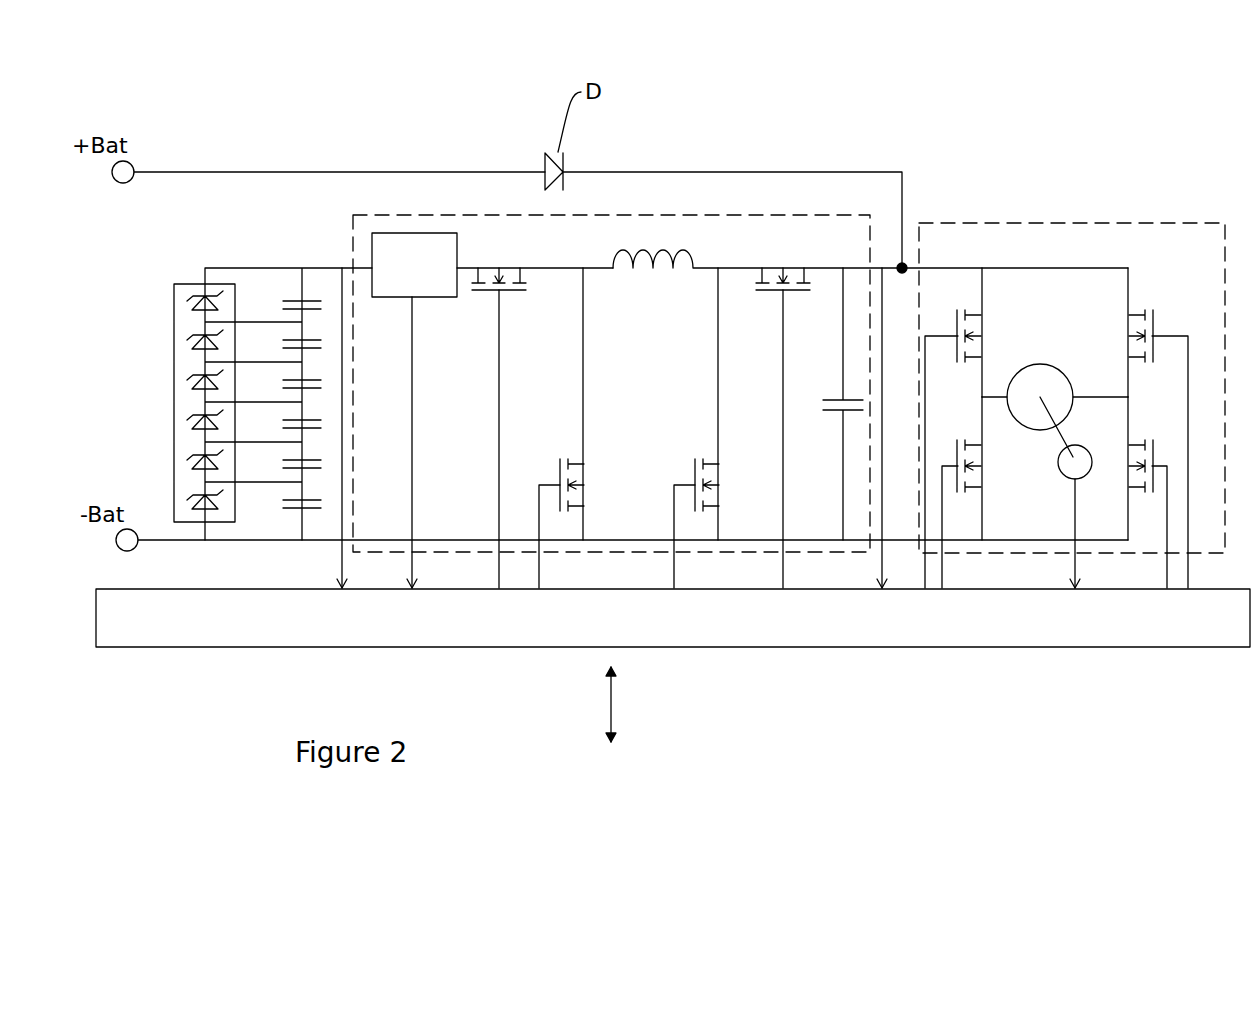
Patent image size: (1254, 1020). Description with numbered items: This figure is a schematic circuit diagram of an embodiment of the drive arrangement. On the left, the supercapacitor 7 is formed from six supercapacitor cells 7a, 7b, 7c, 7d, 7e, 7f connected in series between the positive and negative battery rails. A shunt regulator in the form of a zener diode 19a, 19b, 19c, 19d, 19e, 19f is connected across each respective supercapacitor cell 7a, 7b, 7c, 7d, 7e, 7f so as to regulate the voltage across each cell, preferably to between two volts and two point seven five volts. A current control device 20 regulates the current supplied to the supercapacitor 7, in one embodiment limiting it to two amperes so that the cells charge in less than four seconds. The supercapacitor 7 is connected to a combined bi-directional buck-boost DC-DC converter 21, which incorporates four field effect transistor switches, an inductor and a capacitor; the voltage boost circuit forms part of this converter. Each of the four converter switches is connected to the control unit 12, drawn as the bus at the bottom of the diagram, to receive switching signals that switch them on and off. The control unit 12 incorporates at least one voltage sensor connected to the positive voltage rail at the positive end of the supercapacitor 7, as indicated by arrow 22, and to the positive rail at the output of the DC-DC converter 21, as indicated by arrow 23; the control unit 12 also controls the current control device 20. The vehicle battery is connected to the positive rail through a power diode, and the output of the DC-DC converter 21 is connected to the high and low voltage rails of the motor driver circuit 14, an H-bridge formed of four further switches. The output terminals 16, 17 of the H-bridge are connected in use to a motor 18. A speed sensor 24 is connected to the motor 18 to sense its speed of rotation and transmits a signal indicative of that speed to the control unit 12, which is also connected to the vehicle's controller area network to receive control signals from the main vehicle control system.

The supercapacitor 7 is at (250, 370).
The supercapacitor cell 7a is at (283, 300).
The supercapacitor cell 7b is at (283, 339).
The supercapacitor cell 7c is at (283, 379).
The supercapacitor cell 7d is at (283, 419).
The supercapacitor cell 7e is at (283, 459).
The supercapacitor cell 7f is at (283, 499).
The zener diode 19a is at (192, 298).
The zener diode 19b is at (192, 337).
The zener diode 19c is at (192, 377).
The zener diode 19d is at (192, 417).
The zener diode 19e is at (192, 457).
The zener diode 19f is at (192, 497).
The current control device 20 is at (396, 230).
The bi-directional buck-boost DC-DC converter 21 is at (836, 210).
The arrow 22 is at (325, 428).
The arrow 23 is at (865, 428).
The motor driver circuit 14 is at (1074, 220).
The output terminal 16 is at (1006, 392).
The output terminal 17 is at (1076, 395).
The motor 18 is at (1040, 364).
The speed sensor 24 is at (1083, 446).
The control unit 12 is at (777, 647).